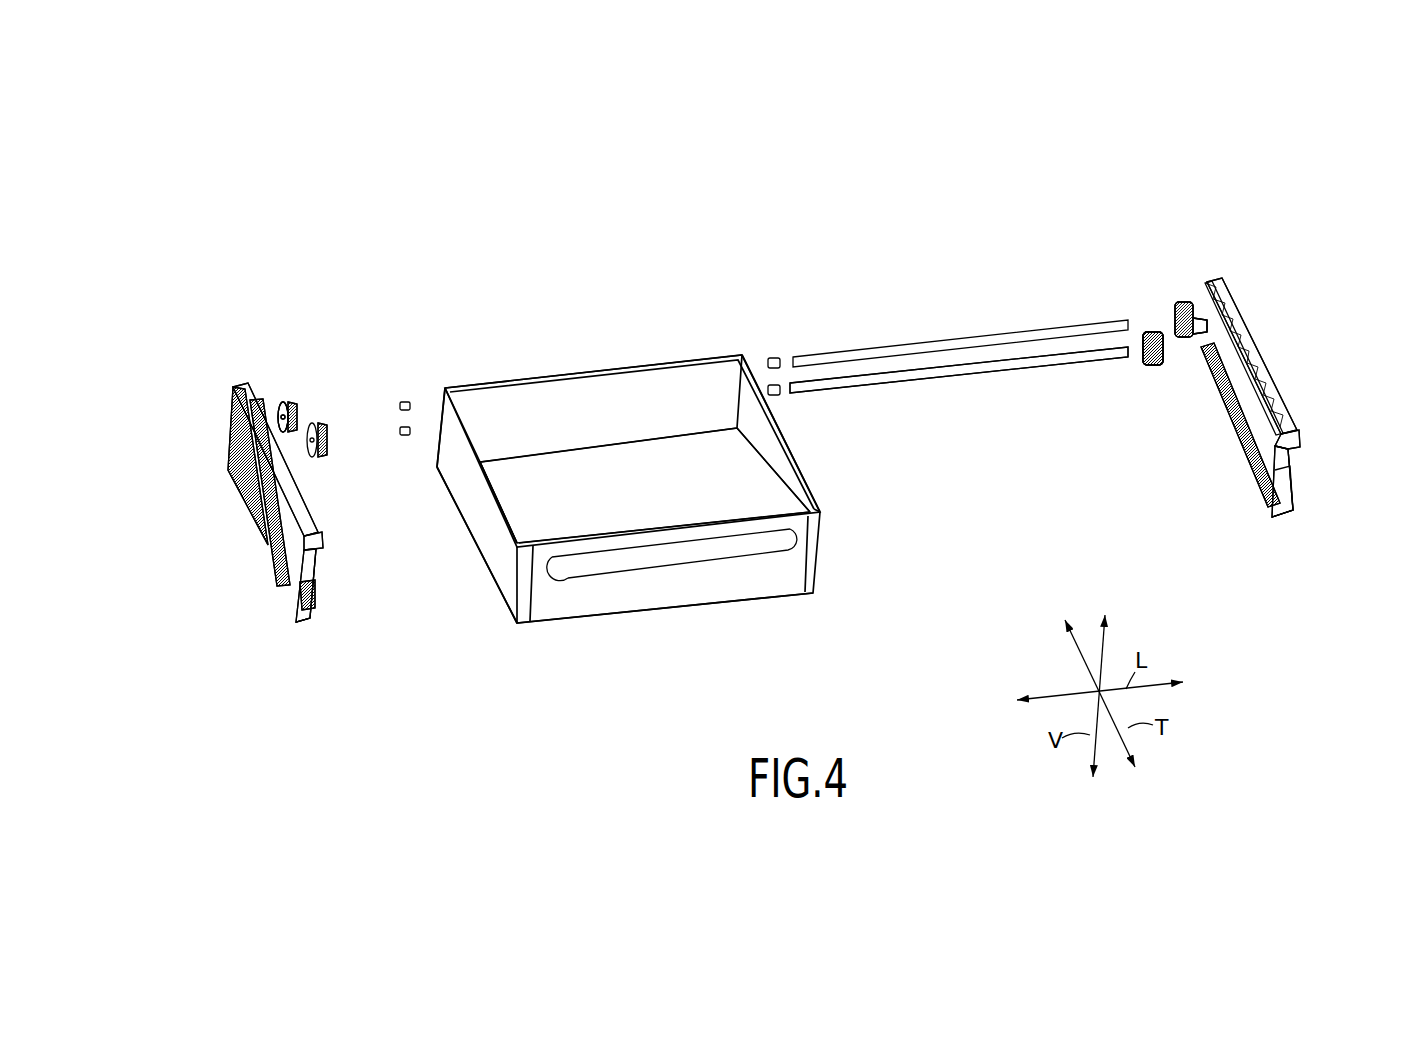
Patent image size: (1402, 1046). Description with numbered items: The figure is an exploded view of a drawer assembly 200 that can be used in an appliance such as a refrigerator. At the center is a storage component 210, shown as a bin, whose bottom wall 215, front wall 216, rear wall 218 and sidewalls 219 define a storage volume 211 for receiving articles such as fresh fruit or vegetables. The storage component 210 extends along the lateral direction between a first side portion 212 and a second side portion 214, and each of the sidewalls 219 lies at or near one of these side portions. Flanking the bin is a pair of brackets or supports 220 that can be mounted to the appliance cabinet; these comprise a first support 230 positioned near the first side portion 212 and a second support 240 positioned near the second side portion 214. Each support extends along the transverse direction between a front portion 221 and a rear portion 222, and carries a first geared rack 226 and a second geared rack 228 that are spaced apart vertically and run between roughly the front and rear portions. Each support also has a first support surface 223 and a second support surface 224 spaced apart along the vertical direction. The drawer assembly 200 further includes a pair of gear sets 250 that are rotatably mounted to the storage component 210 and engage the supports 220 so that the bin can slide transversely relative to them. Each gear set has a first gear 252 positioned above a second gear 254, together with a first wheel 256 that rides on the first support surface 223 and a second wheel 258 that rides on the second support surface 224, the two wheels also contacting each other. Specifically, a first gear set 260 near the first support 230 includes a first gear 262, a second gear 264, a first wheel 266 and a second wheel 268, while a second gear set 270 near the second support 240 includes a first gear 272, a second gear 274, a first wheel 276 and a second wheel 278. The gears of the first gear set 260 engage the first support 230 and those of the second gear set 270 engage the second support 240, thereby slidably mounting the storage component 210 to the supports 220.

The drawer assembly 200 is at (306, 234).
The storage component 210 is at (515, 628).
The storage volume 211 is at (512, 412).
The first side portion 212 is at (440, 364).
The second side portion 214 is at (748, 334).
The bottom wall 215 is at (620, 504).
The front wall 216 is at (680, 598).
The rear wall 218 is at (600, 387).
The sidewalls 219 is at (788, 463).
The supports 220 is at (228, 437).
The front portion 221 is at (290, 628).
The rear portion 222 is at (225, 374).
The first support surface 223 is at (312, 578).
The second support surface 224 is at (298, 620).
The first geared rack 226 is at (308, 557).
The second geared rack 228 is at (317, 605).
The first support 230 is at (268, 546).
The second support 240 is at (1283, 400).
The gear sets 250 is at (283, 386).
The first gear 252 is at (290, 400).
The second gear 254 is at (320, 422).
The first wheel 256 is at (275, 410).
The second wheel 258 is at (325, 427).
The first gear set 260 is at (327, 476).
The first gear 262 is at (300, 438).
The second gear 264 is at (324, 454).
The first wheel 266 is at (282, 412).
The second wheel 268 is at (327, 441).
The second gear set 270 is at (1150, 390).
The first gear 272 is at (1183, 340).
The second gear 274 is at (1148, 365).
The first wheel 276 is at (1197, 330).
The second wheel 278 is at (1143, 360).